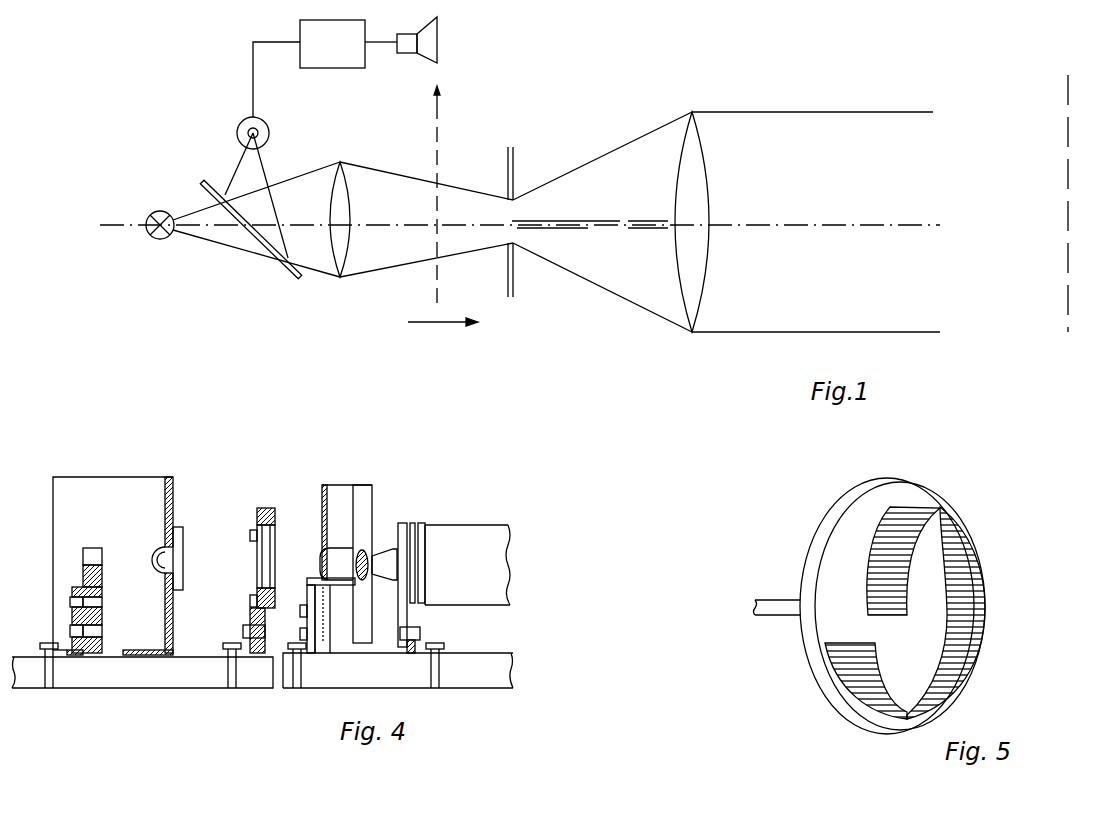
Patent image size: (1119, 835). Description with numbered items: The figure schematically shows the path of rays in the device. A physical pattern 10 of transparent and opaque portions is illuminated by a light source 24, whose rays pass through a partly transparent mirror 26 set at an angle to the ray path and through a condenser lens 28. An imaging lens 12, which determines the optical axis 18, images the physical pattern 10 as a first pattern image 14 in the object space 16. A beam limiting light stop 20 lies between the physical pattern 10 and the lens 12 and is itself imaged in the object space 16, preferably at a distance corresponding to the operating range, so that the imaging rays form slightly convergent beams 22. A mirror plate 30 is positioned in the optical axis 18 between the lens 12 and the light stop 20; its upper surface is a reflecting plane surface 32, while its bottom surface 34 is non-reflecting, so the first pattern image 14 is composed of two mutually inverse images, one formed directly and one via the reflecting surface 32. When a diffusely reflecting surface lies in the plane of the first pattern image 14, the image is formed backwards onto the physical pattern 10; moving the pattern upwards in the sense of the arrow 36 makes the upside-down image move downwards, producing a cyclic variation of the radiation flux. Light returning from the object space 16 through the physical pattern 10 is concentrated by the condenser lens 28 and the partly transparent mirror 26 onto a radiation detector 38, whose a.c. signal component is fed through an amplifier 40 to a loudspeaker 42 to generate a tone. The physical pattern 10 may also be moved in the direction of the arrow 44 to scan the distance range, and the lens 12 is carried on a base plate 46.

In FIG. 1, the physical pattern 10 is at (441, 138).
In FIG. 1, the lens 12 is at (696, 184).
In FIG. 1, the first pattern image 14 is at (1069, 205).
In FIG. 1, the object space 16 is at (1068, 355).
In FIG. 1, the optical axis 18 is at (853, 222).
In FIG. 1, the beam limiting light stop 20 is at (514, 173).
In FIG. 1, the light beam 22 is at (830, 112).
In FIG. 1, the light source 24 is at (166, 240).
In FIG. 1, the partly transparent mirror 26 is at (287, 268).
In FIG. 4, the partly transparent mirror 26 is at (176, 528).
In FIG. 1, the condenser lens 28 is at (338, 270).
In FIG. 4, the condenser lens 28 is at (268, 556).
In FIG. 1, the mirror plate 30 is at (577, 230).
In FIG. 1, the reflecting plane surface 32 is at (582, 215).
In FIG. 1, the non-reflecting bottom surface 34 is at (630, 236).
In FIG. 1, the arrow 36 is at (442, 98).
In FIG. 1, the radiation detector 38 is at (268, 134).
In FIG. 1, the amplifier 40 is at (348, 44).
In FIG. 1, the loudspeaker 42 is at (427, 53).
In FIG. 1, the arrow 44 is at (440, 328).
In FIG. 4, the base plate 46 is at (123, 682).